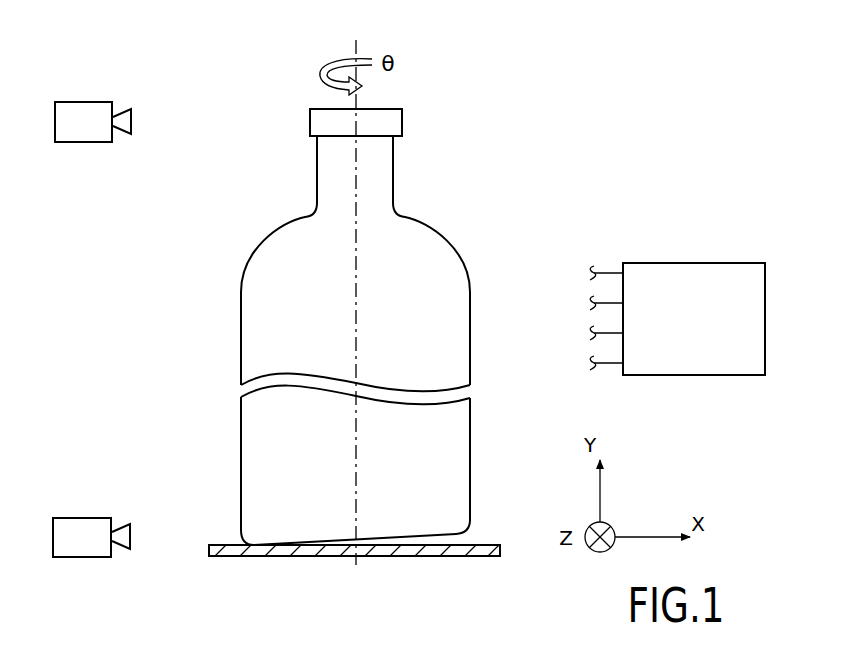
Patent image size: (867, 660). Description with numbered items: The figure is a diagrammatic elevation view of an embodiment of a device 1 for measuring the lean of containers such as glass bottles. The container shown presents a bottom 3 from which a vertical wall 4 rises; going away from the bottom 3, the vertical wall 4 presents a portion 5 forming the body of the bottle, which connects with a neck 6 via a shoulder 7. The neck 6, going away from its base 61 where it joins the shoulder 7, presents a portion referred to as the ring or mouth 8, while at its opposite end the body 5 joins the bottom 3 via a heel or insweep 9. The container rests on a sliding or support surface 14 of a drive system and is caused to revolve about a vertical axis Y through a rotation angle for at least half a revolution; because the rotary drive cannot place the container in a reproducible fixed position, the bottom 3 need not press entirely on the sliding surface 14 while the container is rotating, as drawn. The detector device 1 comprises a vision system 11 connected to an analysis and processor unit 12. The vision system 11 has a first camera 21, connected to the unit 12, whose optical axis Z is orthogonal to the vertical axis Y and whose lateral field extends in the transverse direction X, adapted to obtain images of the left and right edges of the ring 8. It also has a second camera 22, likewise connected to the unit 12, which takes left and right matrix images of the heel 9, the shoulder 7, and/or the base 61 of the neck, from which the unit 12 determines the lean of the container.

The device for measuring the lean of containers 1 is at (701, 133).
The bottom 3 is at (376, 557).
The vertical wall 4 is at (364, 327).
The body 5 is at (240, 450).
The neck 6 is at (316, 172).
The base of the neck 61 is at (401, 206).
The shoulder 7 is at (257, 247).
The ring or mouth 8 is at (403, 124).
The heel or insweep 9 is at (472, 527).
The vision system 11 is at (148, 72).
The analysis and processor unit 12 is at (677, 319).
The sliding or support surface 14 is at (494, 546).
The first camera 21 is at (82, 136).
The second camera 22 is at (82, 551).